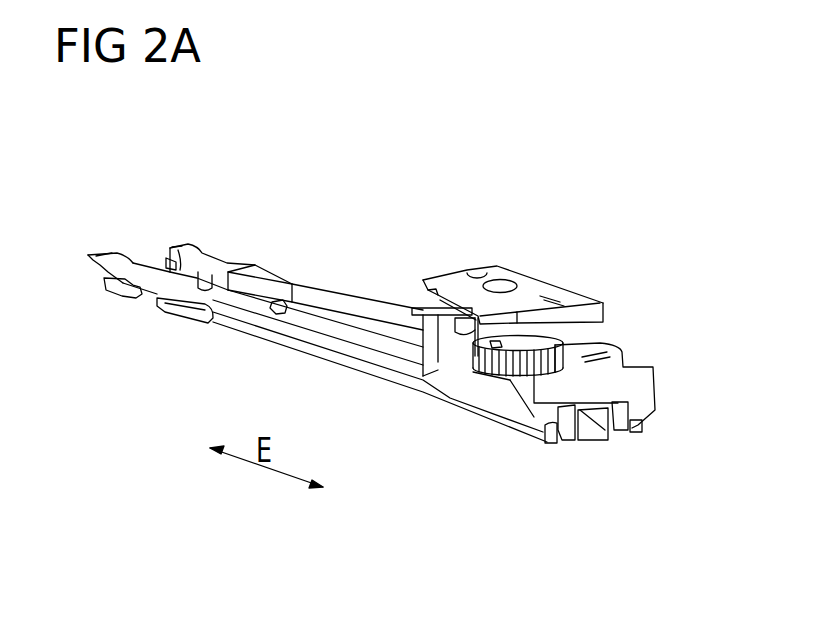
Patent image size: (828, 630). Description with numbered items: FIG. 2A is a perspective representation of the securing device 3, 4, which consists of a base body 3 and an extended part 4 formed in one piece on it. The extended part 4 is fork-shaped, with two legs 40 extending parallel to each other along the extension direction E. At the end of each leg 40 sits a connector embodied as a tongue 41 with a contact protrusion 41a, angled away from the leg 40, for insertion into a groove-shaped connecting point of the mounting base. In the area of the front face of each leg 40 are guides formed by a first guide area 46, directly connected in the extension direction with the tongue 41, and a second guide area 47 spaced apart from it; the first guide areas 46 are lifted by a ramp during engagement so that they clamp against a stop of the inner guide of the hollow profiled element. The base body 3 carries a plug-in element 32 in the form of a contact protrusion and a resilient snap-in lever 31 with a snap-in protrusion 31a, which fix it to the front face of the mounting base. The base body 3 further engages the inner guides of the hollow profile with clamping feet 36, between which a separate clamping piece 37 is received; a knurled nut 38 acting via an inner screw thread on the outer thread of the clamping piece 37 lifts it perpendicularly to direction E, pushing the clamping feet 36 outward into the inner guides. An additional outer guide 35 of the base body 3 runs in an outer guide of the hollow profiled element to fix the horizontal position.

The base body 3 is at (640, 338).
The extended part 4 is at (386, 280).
The snap-in lever 31 is at (474, 270).
The snap-in protrusion 31a is at (425, 279).
The plug-in element 32 is at (413, 297).
The outer guide 35 is at (543, 445).
The clamping feet 36 is at (563, 445).
The clamping piece 37 is at (592, 430).
The knurled nut 38 is at (497, 378).
The legs 40 is at (325, 306).
The tongue 41 is at (203, 257).
The contact protrusion 41a is at (182, 247).
The first guide area 46 is at (170, 263).
The second guide area 47 is at (280, 306).